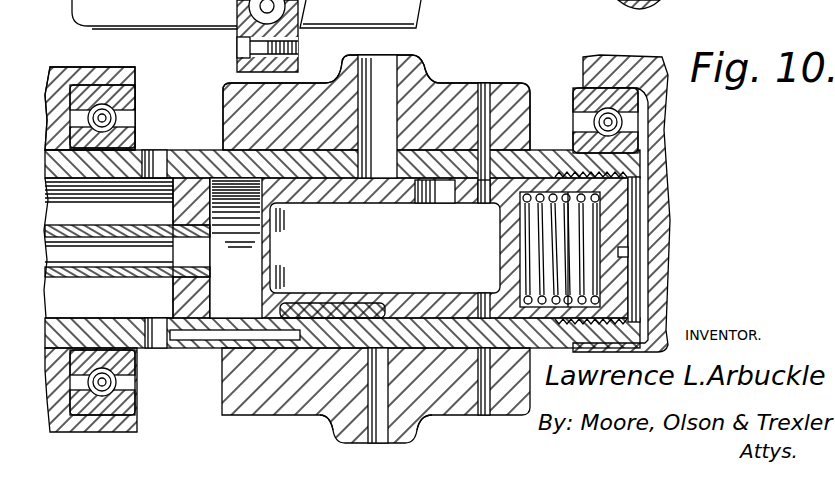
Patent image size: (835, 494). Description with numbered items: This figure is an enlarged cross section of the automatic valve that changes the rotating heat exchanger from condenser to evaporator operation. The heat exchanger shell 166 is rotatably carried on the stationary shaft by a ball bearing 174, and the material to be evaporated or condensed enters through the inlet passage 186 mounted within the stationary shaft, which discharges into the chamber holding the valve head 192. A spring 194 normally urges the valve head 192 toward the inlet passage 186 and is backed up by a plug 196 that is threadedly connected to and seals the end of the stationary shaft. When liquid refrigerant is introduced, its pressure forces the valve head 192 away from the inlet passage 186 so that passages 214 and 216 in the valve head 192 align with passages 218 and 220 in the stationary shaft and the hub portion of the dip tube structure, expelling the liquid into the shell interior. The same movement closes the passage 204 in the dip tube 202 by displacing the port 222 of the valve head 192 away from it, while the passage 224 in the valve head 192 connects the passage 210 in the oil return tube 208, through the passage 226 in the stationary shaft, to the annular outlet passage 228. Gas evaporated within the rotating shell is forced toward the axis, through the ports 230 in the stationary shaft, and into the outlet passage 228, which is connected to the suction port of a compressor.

The heat exchanger shell 166 is at (62, 68).
The ball bearing 174 is at (126, 96).
The ports 230 is at (155, 165).
The dip tube 202 is at (412, 66).
The passage 204 is at (385, 65).
The passage 218 is at (483, 95).
The inlet passage 186 is at (143, 220).
The valve head 192 is at (404, 297).
The port 222 is at (444, 197).
The passage 214 is at (485, 203).
The passage 216 is at (485, 295).
The passage 224 is at (322, 300).
The spring 194 is at (587, 227).
The plug 196 is at (618, 285).
The annular outlet passage 228 is at (157, 320).
The passage 226 is at (215, 335).
The oil return tube 208 is at (345, 432).
The passage 210 is at (368, 450).
The passage 220 is at (485, 395).